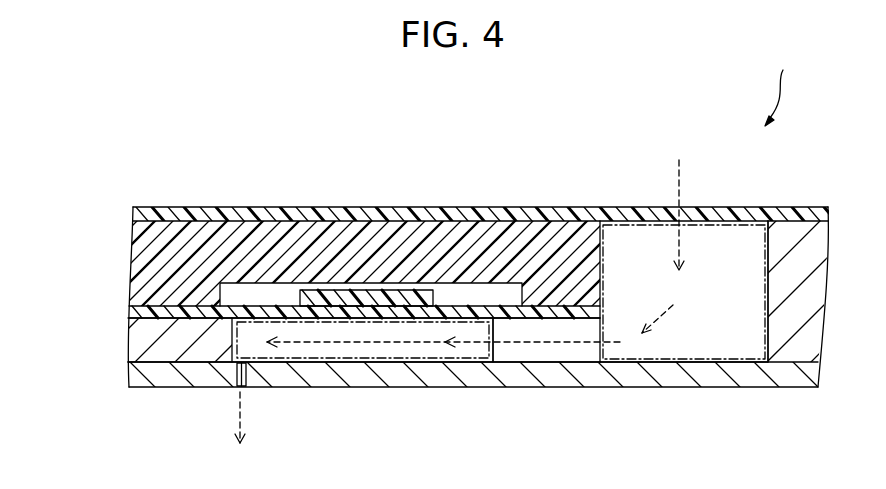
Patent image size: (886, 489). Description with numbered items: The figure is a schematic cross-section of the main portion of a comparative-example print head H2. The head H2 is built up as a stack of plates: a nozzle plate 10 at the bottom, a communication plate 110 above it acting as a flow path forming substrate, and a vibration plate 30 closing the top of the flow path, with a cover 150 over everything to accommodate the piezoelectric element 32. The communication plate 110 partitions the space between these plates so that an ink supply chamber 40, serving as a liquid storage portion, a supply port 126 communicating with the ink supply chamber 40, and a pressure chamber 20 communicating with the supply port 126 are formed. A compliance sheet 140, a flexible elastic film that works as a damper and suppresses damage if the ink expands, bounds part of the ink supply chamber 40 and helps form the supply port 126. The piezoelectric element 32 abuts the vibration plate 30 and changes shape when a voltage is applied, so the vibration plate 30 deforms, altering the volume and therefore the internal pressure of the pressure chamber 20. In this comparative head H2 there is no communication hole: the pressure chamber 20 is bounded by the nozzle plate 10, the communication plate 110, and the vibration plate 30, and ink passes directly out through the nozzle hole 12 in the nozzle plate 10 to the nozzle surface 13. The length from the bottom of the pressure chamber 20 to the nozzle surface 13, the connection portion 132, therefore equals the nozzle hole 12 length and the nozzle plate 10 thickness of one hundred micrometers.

The nozzle plate 10 is at (473, 420).
The nozzle hole 12 is at (286, 403).
The nozzle surface 13 is at (200, 387).
The pressure chamber 20 is at (395, 347).
The vibration plate 30 is at (135, 310).
The piezoelectric element 32 is at (337, 297).
The ink supply chamber 40 is at (718, 250).
The communication plate 110 is at (142, 340).
The supply port 126 is at (542, 352).
The connection portion 132 is at (240, 387).
The compliance sheet 140 is at (628, 222).
The cover 150 is at (228, 237).
The head H2 is at (783, 86).